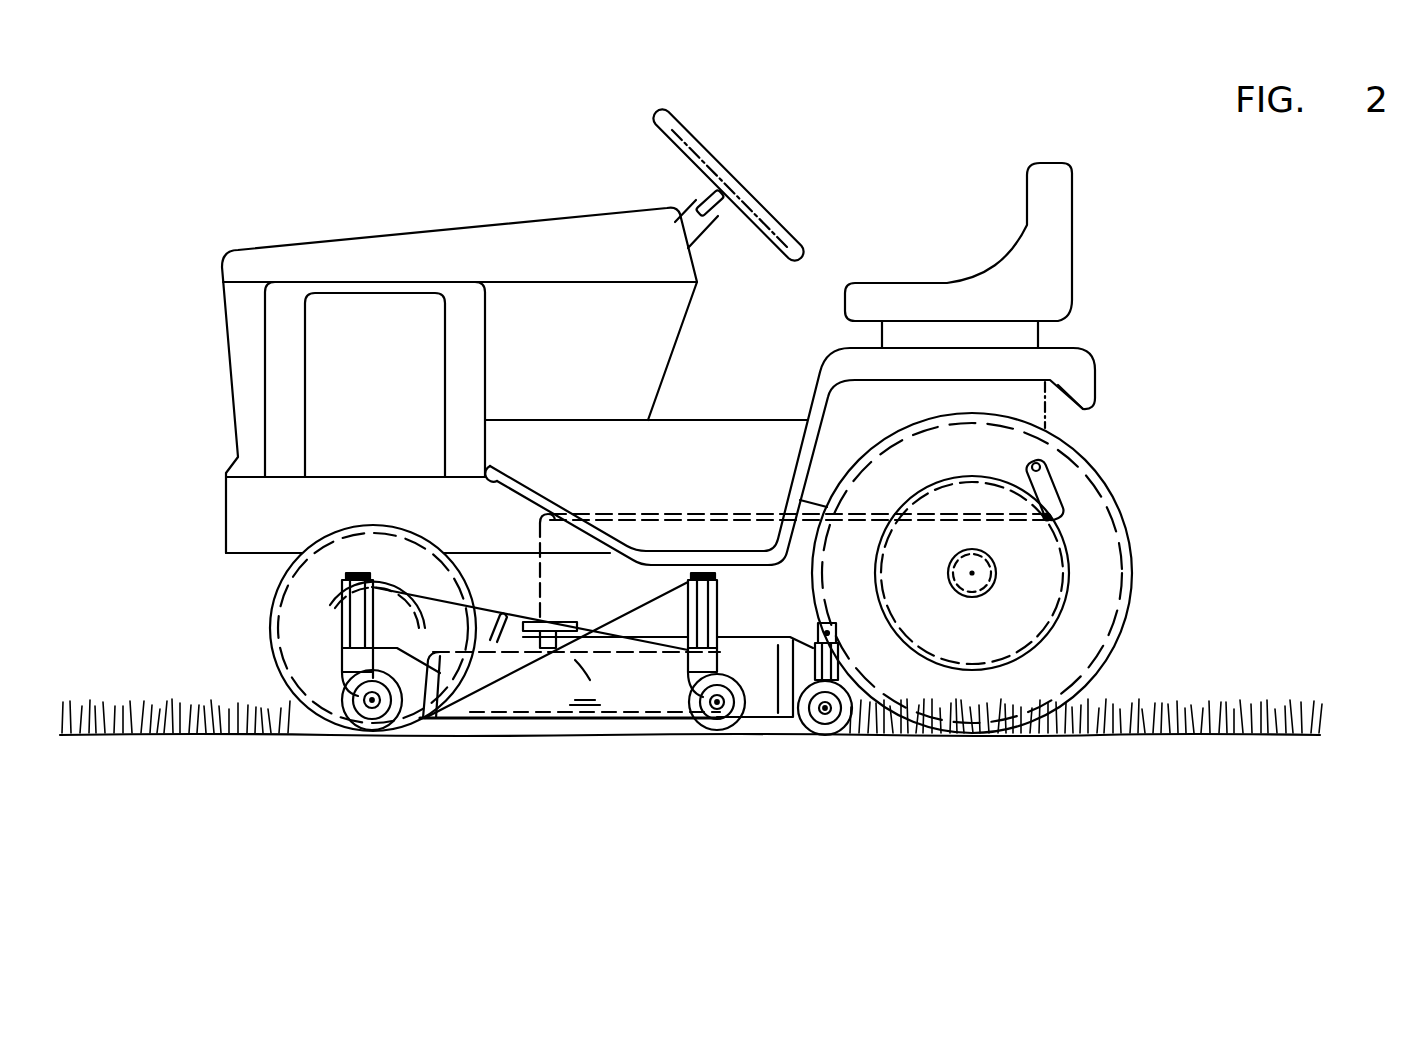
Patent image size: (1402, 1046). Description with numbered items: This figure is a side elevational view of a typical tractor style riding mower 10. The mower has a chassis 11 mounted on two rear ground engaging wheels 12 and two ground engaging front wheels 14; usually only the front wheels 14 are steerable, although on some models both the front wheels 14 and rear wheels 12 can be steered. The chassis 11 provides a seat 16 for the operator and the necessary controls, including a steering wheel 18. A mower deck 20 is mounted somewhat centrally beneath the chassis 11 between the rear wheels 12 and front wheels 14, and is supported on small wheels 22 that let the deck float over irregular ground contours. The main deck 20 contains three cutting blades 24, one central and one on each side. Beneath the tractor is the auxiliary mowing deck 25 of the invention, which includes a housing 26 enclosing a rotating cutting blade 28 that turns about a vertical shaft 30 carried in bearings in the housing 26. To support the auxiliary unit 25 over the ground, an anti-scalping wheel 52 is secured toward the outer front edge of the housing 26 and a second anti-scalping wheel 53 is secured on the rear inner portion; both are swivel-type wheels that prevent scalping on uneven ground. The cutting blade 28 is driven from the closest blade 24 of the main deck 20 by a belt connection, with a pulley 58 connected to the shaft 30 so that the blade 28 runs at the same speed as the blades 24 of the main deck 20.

The tractor style riding mower 10 is at (372, 227).
The chassis 11 is at (223, 523).
The rear ground engaging wheels 12 is at (1133, 560).
The front wheels 14 is at (272, 606).
The seat 16 is at (1074, 252).
The steering wheel 18 is at (720, 155).
The mower deck 20 is at (777, 720).
The small wheels 22 is at (835, 727).
The cutting blades 24 is at (673, 737).
The auxiliary mowing deck 25 is at (632, 727).
The housing 26 is at (447, 705).
The cutting blade 28 is at (493, 742).
The shaft 30 is at (583, 738).
The anti-scalping wheel 52 is at (357, 692).
The second anti-scalping wheel 53 is at (697, 717).
The pulley 58 is at (562, 622).